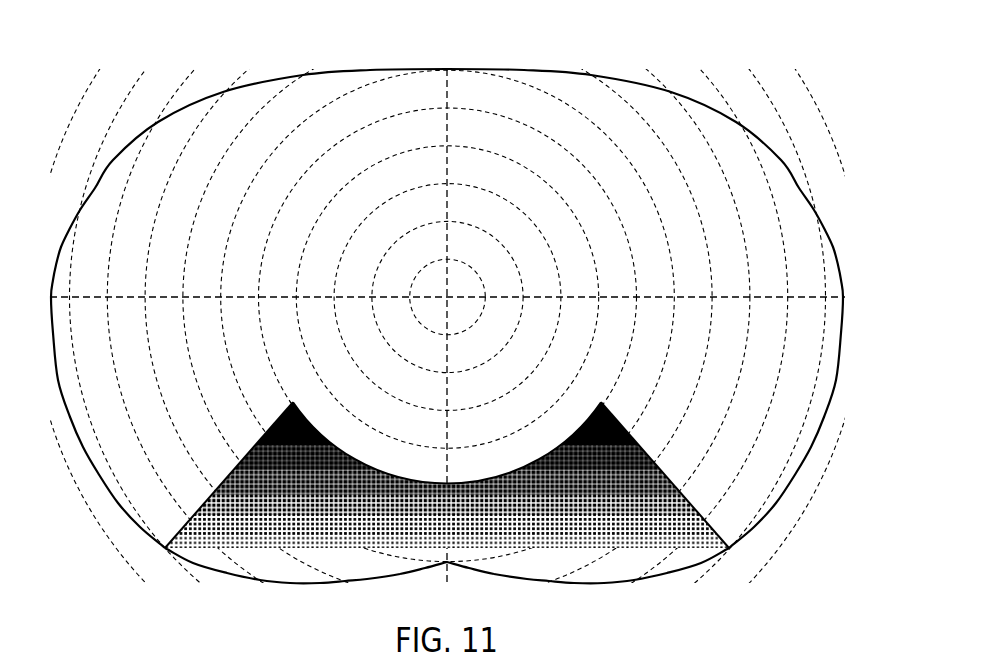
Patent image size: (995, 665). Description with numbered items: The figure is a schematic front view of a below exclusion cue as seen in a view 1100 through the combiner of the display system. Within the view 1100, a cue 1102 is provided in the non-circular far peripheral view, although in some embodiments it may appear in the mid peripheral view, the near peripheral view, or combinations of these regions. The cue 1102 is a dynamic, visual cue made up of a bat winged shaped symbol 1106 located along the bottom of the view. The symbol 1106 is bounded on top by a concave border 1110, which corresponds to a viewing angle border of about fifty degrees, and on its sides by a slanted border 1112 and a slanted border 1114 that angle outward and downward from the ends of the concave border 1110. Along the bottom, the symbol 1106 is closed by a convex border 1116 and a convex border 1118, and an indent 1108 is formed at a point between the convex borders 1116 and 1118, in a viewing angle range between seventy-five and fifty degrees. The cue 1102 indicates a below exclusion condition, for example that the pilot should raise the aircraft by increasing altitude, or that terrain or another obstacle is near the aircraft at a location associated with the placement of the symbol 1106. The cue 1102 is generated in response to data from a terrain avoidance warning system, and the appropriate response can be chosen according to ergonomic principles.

The view 1100 is at (592, 39).
The cue 1102 is at (390, 442).
The bat winged shaped symbol 1106 is at (492, 490).
The indent 1108 is at (453, 567).
The concave border 1110 is at (570, 437).
The slanted border 1112 is at (234, 469).
The slanted border 1114 is at (660, 469).
The convex border 1116 is at (288, 583).
The convex border 1118 is at (607, 583).